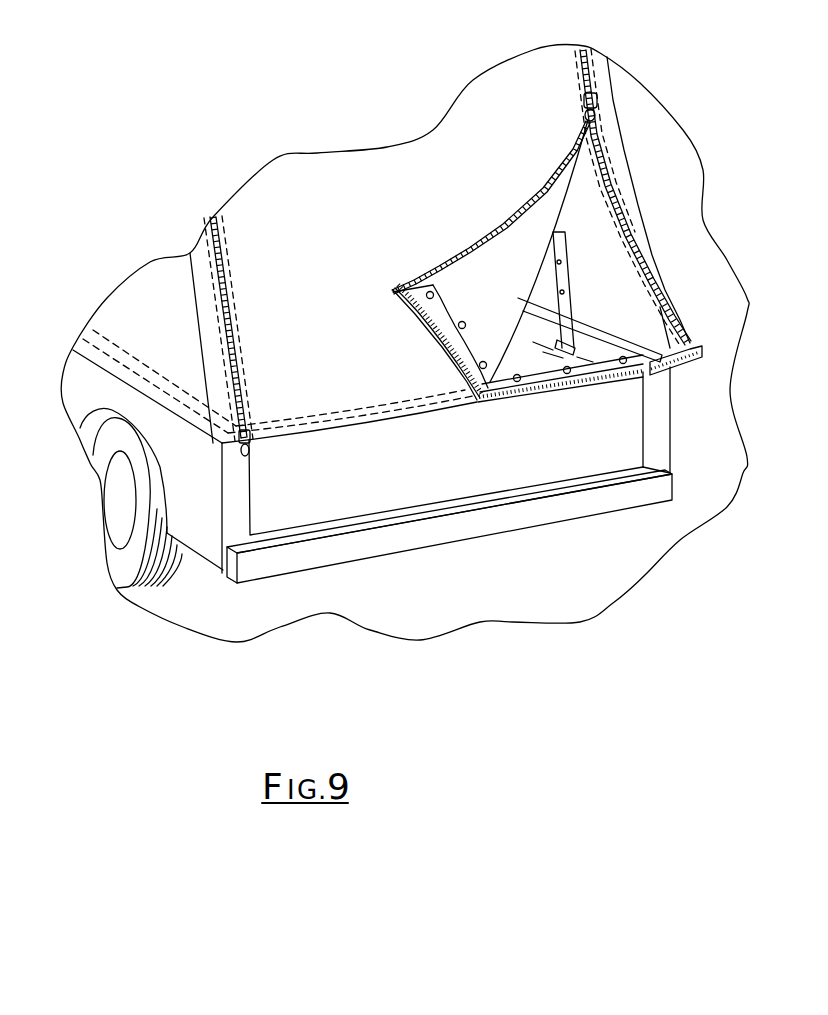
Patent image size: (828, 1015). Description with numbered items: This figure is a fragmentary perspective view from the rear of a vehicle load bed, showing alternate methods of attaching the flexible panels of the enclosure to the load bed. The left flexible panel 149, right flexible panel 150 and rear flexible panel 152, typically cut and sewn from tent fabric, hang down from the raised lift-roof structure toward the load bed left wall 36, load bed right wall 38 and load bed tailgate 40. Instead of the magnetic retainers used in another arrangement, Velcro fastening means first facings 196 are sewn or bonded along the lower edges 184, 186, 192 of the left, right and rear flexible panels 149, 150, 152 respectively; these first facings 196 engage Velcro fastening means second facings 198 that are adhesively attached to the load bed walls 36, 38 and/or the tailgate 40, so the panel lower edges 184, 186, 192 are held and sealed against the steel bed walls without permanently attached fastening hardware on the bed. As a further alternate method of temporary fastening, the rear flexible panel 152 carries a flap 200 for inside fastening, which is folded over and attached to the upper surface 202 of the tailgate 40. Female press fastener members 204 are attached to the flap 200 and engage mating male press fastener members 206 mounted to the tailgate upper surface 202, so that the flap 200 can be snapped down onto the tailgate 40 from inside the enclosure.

The load bed left wall 36 is at (186, 440).
The load bed right wall 38 is at (590, 331).
The load bed tailgate 40 is at (393, 500).
The left flexible panel 149 is at (173, 303).
The right flexible panel 150 is at (610, 128).
The rear flexible panel 152 is at (337, 190).
The lower edge of left flexible panel 184 is at (122, 357).
The lower edge of right flexible panel 186 is at (688, 345).
The sewn seams 192 is at (273, 432).
The Velcro fastening means first facings 196 is at (470, 372).
The Velcro fastening means second facings 198 is at (652, 375).
The flap 200 is at (443, 297).
The upper surface of load bed tailgate 202 is at (607, 372).
The female press fastener members 204 is at (483, 382).
The male press fastener members 206 is at (502, 396).